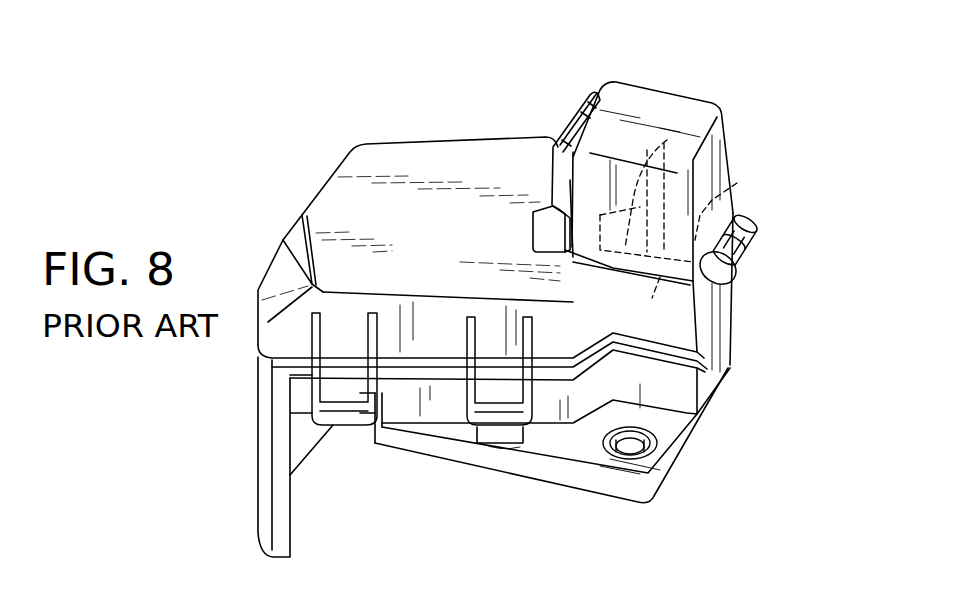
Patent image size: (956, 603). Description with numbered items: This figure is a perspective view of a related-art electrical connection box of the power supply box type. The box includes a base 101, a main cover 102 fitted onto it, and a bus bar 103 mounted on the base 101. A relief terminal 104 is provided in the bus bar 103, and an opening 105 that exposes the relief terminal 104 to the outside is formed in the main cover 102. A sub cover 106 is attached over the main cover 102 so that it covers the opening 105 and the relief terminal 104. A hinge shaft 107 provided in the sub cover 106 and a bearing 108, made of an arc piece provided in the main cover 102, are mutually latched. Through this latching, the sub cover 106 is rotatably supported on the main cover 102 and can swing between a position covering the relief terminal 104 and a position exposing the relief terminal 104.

The base 101 is at (722, 381).
The main cover 102 is at (403, 142).
The bus bar 103 is at (654, 301).
The relief terminal 104 is at (667, 140).
The opening 105 is at (737, 183).
The sub cover 106 is at (639, 83).
The hinge shaft 107 is at (745, 248).
The bearing 108 is at (745, 258).